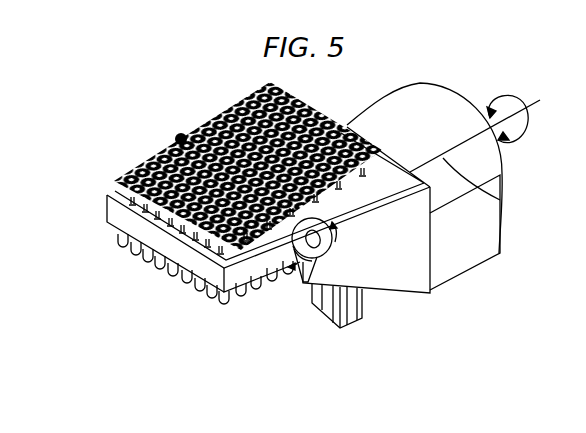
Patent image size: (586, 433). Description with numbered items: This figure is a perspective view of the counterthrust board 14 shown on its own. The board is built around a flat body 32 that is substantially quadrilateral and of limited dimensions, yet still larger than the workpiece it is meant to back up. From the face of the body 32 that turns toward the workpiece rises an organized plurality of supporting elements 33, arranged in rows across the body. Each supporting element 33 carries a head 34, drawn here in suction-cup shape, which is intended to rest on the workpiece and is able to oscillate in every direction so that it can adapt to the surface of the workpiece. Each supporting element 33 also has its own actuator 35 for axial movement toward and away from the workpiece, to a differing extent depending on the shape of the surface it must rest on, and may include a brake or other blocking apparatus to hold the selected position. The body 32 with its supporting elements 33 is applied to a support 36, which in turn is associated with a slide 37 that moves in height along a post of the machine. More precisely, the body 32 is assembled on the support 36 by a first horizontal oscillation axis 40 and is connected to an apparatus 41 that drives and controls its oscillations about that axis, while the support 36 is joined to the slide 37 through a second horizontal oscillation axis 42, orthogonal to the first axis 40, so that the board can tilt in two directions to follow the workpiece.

The counterthrust board 14 is at (137, 278).
The flat body 32 is at (229, 295).
The supporting elements 33 is at (200, 112).
The head 34 is at (178, 134).
The actuator 35 is at (125, 253).
The support 36 is at (398, 283).
The slide 37 is at (410, 100).
The first horizontal oscillation axis 40 is at (300, 283).
The apparatus for driving and controlling oscillations 41 is at (328, 317).
The second horizontal oscillation axis 42 is at (500, 197).